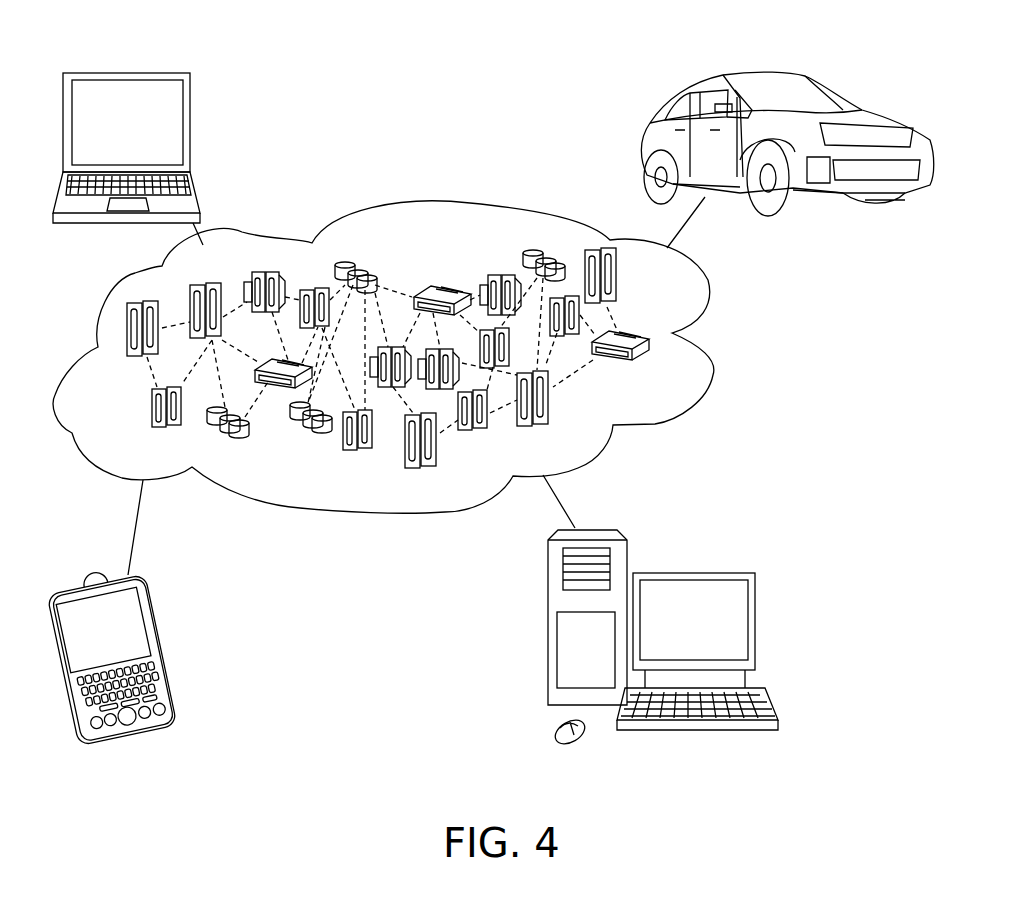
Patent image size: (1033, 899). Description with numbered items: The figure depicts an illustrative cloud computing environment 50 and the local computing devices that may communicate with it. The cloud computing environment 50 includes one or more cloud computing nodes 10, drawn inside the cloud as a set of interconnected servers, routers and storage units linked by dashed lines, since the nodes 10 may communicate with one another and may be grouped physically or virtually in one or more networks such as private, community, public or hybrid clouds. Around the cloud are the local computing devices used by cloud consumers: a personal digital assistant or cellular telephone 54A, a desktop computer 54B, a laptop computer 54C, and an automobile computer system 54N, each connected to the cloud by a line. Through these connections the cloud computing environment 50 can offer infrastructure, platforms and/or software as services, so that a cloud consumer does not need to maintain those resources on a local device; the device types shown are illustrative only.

The cloud computing nodes 10 is at (663, 383).
The cloud computing environment 50 is at (713, 287).
The personal digital assistant (PDA) or cellular telephone 54A is at (157, 618).
The desktop computer 54B is at (755, 618).
The laptop computer 54C is at (190, 128).
The automobile computer system 54N is at (820, 92).